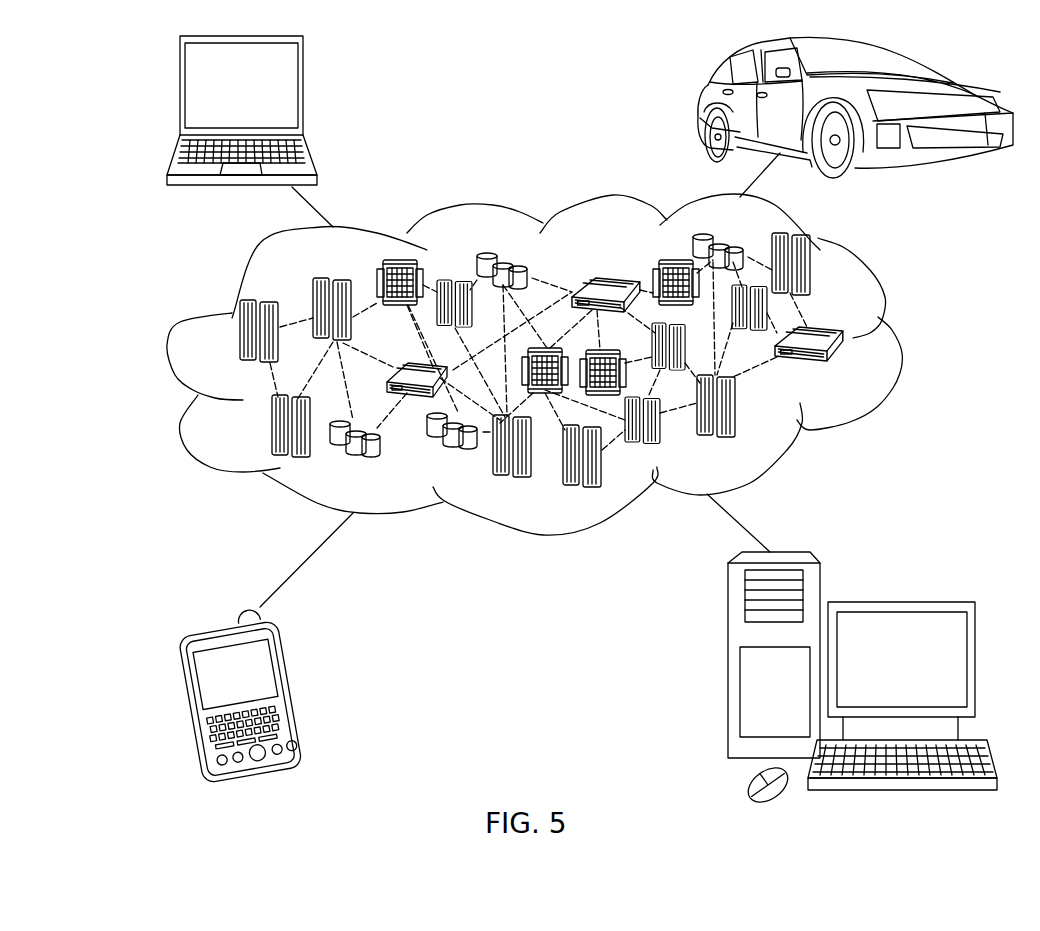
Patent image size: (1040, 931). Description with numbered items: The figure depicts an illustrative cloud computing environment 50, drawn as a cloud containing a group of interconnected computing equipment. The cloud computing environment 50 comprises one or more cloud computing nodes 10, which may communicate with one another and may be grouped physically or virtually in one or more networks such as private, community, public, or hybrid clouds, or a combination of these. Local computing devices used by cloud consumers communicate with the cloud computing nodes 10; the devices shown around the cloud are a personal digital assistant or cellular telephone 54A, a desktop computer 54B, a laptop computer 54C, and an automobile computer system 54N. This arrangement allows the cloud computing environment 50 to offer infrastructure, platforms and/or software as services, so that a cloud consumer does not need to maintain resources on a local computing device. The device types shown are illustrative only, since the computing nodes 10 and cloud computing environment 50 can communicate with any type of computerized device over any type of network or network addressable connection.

The cloud computing environment 50 is at (898, 341).
The cloud computing nodes 10 is at (840, 378).
The personal digital assistant or cellular telephone 54A is at (295, 690).
The desktop computer 54B is at (898, 602).
The laptop computer 54C is at (303, 92).
The automobile computer system 54N is at (700, 108).